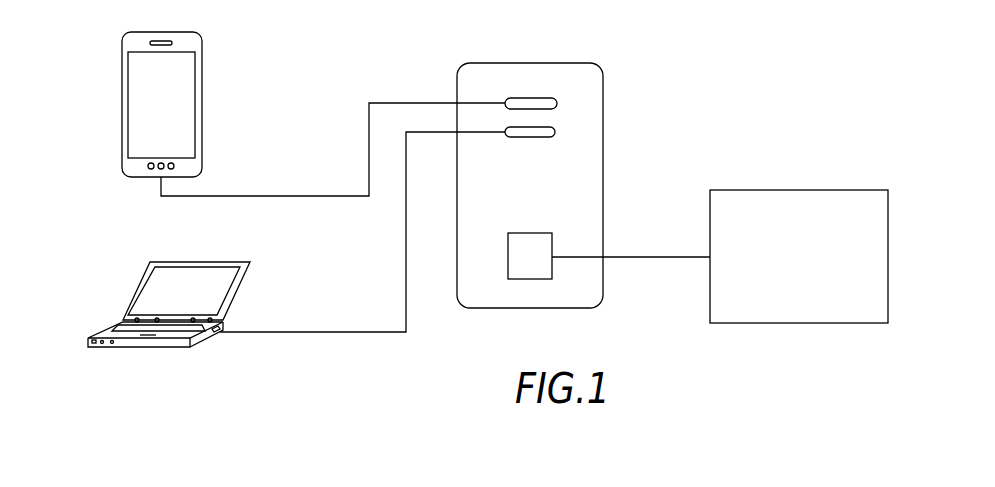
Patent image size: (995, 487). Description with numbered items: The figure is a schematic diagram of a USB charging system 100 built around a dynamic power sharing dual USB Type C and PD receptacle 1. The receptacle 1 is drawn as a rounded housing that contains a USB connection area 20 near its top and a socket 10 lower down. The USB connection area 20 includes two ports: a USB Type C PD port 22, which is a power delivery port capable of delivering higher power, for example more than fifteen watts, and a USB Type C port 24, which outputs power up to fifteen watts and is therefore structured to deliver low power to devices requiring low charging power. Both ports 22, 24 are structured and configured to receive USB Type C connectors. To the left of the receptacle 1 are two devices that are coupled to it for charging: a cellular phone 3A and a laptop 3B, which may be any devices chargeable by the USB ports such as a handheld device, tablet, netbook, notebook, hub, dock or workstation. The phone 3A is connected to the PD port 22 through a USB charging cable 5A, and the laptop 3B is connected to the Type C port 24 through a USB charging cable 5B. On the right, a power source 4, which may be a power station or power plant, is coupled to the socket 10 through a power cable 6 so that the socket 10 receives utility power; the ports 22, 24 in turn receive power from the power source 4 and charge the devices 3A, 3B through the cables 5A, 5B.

The USB charging system 100 is at (98, 79).
The dynamic power sharing dual USB Type C & PD receptacle 1 is at (457, 72).
The device 3A is at (202, 68).
The device 3B is at (243, 280).
The USB charging cable 5A is at (298, 196).
The USB charging cable 5B is at (346, 332).
The USB connection area 20 is at (562, 93).
The USB Type C PD port 22 is at (558, 101).
The USB Type C port 24 is at (553, 138).
The socket 10 is at (518, 233).
The power cable 6 is at (638, 257).
The power source 4 is at (775, 190).